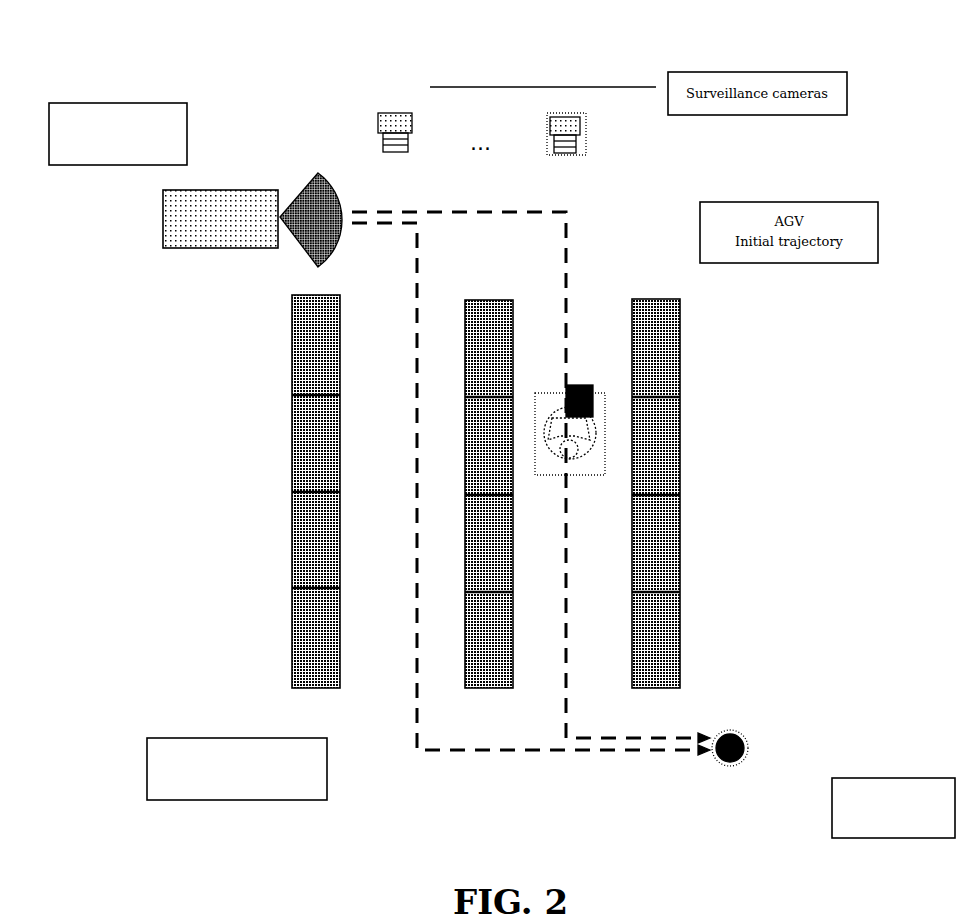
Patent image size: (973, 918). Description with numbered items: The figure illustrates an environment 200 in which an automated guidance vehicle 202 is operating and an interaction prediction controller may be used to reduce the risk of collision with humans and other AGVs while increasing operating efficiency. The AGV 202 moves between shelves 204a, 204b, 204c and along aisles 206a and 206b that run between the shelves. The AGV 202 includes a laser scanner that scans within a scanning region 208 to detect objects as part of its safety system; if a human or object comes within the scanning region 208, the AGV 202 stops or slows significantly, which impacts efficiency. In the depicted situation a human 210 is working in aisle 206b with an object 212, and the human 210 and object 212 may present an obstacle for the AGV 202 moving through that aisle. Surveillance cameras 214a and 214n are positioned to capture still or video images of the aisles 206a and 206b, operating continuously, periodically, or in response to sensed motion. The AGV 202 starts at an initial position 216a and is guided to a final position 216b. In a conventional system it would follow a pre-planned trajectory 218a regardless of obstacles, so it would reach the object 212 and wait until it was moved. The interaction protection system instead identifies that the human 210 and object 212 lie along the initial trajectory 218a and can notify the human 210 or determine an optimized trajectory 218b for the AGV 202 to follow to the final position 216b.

The environment 200 is at (460, 33).
The automated guidance vehicle 202 is at (163, 220).
The shelf 204a is at (274, 491).
The shelf 204b is at (498, 300).
The shelf 204c is at (683, 447).
The aisle 206a is at (412, 778).
The aisle 206b is at (580, 778).
The scanning region 208 is at (307, 188).
The human 210 is at (583, 460).
The object 212 is at (570, 383).
The surveillance camera 214a is at (383, 117).
The surveillance camera 214n is at (556, 118).
The initial position 216a is at (137, 130).
The final position 216b is at (833, 784).
The pre-planned trajectory 218a is at (531, 477).
The optimized trajectory 218b is at (428, 511).